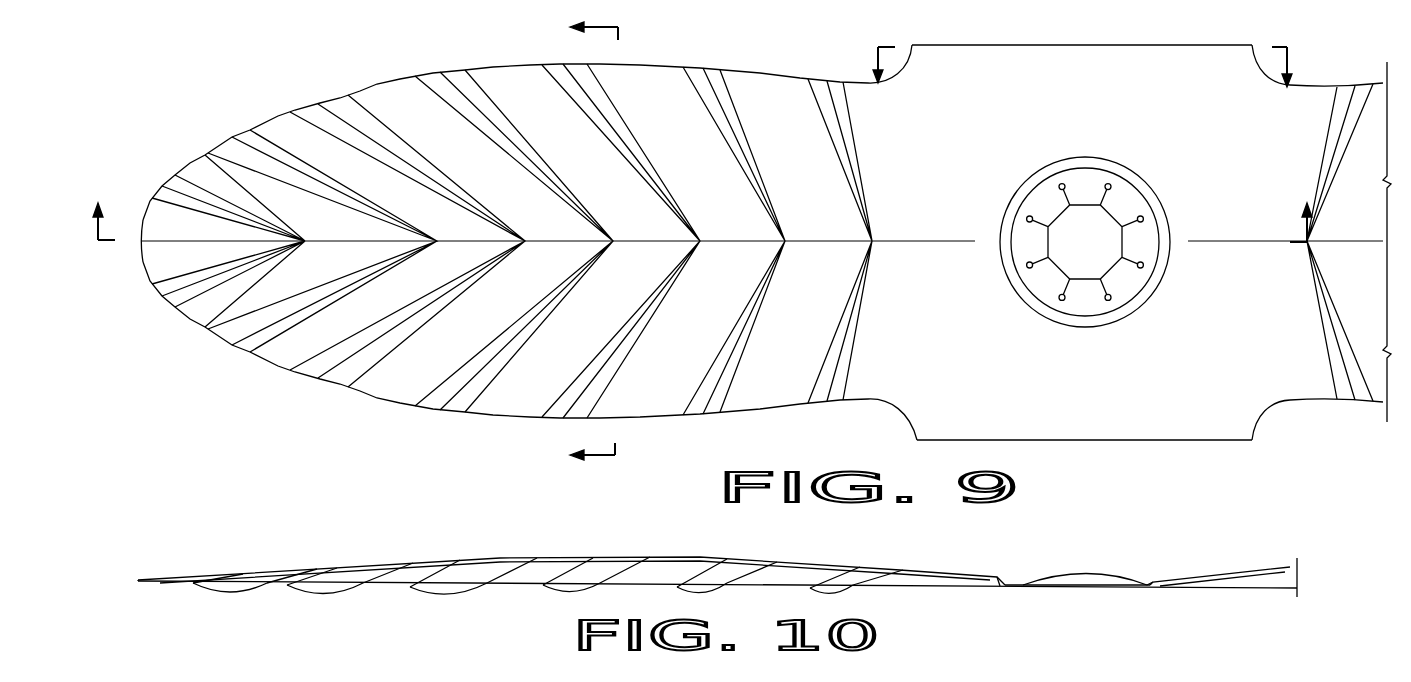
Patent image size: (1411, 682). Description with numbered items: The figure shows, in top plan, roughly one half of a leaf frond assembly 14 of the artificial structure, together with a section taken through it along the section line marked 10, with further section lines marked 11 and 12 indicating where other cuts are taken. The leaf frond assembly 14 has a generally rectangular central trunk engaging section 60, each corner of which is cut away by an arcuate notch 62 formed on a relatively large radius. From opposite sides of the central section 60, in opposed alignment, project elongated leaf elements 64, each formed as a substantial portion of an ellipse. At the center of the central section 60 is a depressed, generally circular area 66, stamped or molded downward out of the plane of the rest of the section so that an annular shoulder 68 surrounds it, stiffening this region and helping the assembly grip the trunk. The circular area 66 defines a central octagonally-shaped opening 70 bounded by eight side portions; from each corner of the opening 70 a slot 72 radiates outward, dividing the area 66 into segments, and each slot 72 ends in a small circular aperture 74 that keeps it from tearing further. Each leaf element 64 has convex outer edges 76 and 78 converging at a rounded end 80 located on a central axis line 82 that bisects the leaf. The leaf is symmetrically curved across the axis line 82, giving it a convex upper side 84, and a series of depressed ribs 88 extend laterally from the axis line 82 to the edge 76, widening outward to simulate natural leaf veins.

In FIG. 9, the section view arrow 10 is at (702, 210).
In FIG. 9, the section view arrow 11 is at (577, 243).
In FIG. 9, the section view arrow 12 is at (1081, 82).
In FIG. 9, the leaf frond assembly 14 is at (1092, 450).
In FIG. 9, the central trunk engaging section 60 is at (1040, 116).
In FIG. 9, the arcuate notch 62 is at (902, 63).
In FIG. 9, the elongated leaf element 64 is at (365, 405).
In FIG. 10, the elongated leaf element 64 is at (556, 549).
In FIG. 9, the circular area 66 is at (1090, 305).
In FIG. 10, the circular area 66 is at (1027, 589).
In FIG. 9, the annular shoulder 68 is at (1025, 296).
In FIG. 10, the annular shoulder 68 is at (1152, 581).
In FIG. 9, the octagonally-shaped opening 70 is at (1093, 209).
In FIG. 10, the octagonally-shaped opening 70 is at (1055, 589).
In FIG. 9, the slot 72 is at (1037, 224).
In FIG. 9, the circular aperture 74 is at (1028, 215).
In FIG. 9, the convex outer edge 76 is at (381, 83).
In FIG. 9, the convex outer edge 78 is at (500, 418).
In FIG. 9, the rounded end 80 is at (141, 241).
In FIG. 10, the rounded end 80 is at (135, 580).
In FIG. 9, the axis line 82 is at (548, 247).
In FIG. 10, the convex upper side 84 is at (508, 678).
In FIG. 9, the rib 88 is at (453, 103).